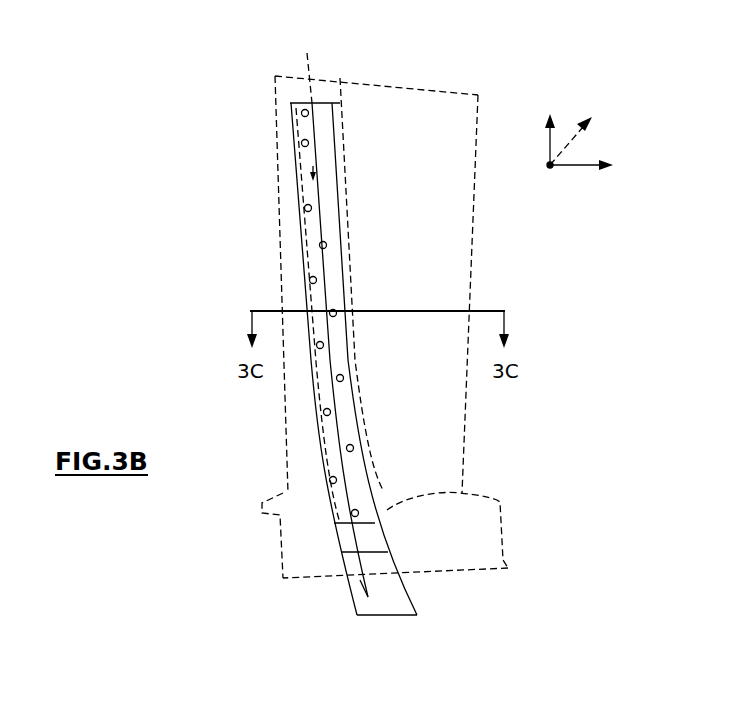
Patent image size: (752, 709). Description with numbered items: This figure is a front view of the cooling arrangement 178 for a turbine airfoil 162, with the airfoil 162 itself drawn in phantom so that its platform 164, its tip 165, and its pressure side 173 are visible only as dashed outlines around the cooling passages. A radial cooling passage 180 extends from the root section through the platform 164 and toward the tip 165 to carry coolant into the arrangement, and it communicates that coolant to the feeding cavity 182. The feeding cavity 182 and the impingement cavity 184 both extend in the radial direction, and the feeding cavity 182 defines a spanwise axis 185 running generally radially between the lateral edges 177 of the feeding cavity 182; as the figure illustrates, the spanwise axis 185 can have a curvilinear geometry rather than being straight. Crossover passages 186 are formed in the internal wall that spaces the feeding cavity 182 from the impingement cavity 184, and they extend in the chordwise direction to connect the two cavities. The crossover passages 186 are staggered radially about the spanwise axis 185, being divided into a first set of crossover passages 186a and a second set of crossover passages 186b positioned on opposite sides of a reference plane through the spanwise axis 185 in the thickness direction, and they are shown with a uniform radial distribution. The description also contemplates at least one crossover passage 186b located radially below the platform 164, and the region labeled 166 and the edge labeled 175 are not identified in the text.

The airfoil 162 is at (549, 63).
The platform 164 is at (477, 573).
The tip 165 is at (441, 93).
The airfoil 166 is at (278, 276).
The pressure side 173 is at (447, 283).
The leading edge 175 is at (280, 233).
The lateral edges 177 is at (360, 407).
The cooling arrangement 178 is at (367, 96).
The radial cooling passage 180 is at (349, 583).
The feeding cavity 182 is at (340, 537).
The impingement cavity 184 is at (380, 517).
The spanwise axis 185 is at (380, 594).
The crossover passages 186 is at (302, 111).
The first set of crossover passages 186a is at (305, 206).
The second set of crossover passages 186b is at (334, 311).